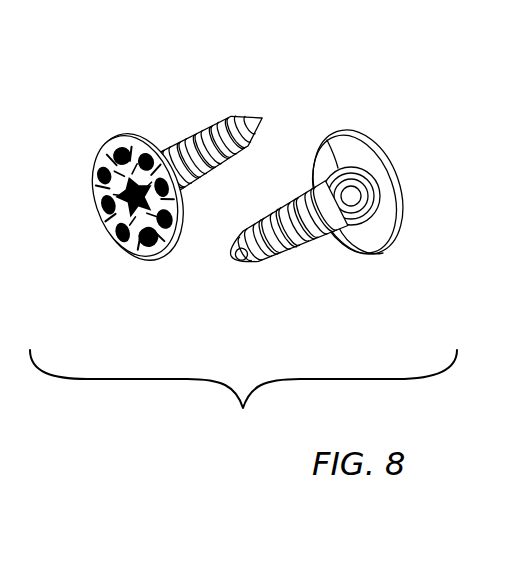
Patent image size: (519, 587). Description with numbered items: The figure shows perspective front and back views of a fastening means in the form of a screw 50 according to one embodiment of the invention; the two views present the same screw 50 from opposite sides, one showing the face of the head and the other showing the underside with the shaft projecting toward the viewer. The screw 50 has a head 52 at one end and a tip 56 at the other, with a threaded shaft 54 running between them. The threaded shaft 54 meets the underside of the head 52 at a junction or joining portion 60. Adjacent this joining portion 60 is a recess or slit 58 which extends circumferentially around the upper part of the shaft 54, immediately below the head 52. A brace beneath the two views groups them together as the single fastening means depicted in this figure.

The screw 50 is at (102, 137).
The head 52 is at (127, 245).
The threaded shaft 54 is at (193, 140).
The tip 56 is at (229, 268).
The recess or slit 58 is at (380, 253).
The junction or joining portion 60 is at (327, 140).